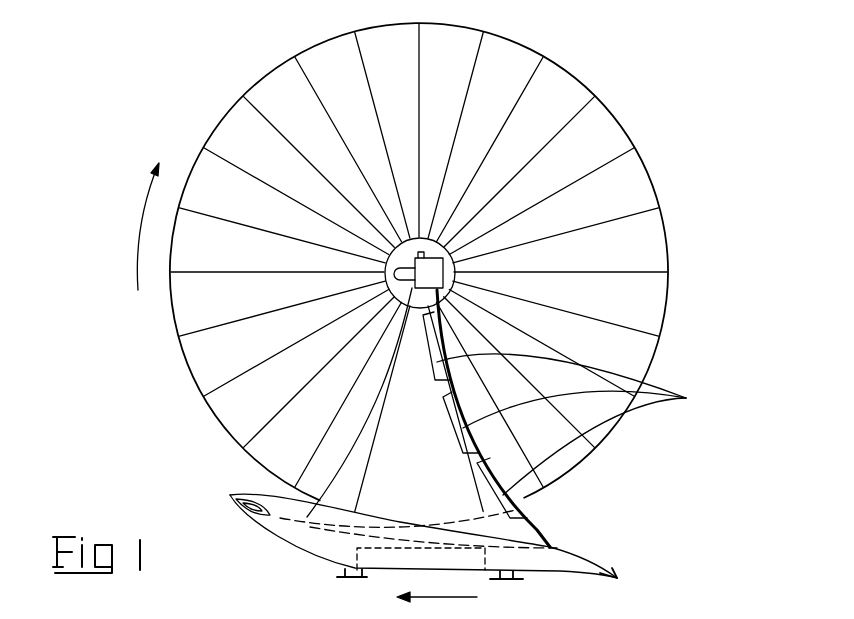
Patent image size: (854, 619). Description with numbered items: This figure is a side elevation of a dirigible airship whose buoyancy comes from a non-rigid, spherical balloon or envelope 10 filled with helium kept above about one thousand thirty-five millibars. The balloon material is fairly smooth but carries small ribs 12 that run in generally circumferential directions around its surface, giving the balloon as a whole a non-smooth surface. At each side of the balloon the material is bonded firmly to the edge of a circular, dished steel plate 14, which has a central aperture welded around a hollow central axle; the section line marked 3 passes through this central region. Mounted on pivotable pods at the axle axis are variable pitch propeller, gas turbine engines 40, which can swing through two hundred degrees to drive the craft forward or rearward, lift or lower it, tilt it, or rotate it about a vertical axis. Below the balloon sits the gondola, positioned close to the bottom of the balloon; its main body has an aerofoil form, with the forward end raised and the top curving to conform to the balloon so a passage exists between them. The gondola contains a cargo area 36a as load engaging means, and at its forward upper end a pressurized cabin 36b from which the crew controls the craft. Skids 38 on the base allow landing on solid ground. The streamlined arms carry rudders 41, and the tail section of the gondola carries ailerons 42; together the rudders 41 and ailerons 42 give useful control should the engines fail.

The balloon or envelope 10 is at (636, 181).
The ribs 12 is at (635, 152).
The circular dished steel plate 14 is at (447, 283).
The variable pitch propeller gas turbine engines 40 is at (445, 266).
The rudders 41 is at (578, 424).
The section line 3- 3 is at (417, 328).
The cargo area 36a is at (388, 576).
The cabin 36b is at (242, 510).
The skids 38 is at (510, 583).
The ailerons 42 is at (617, 582).